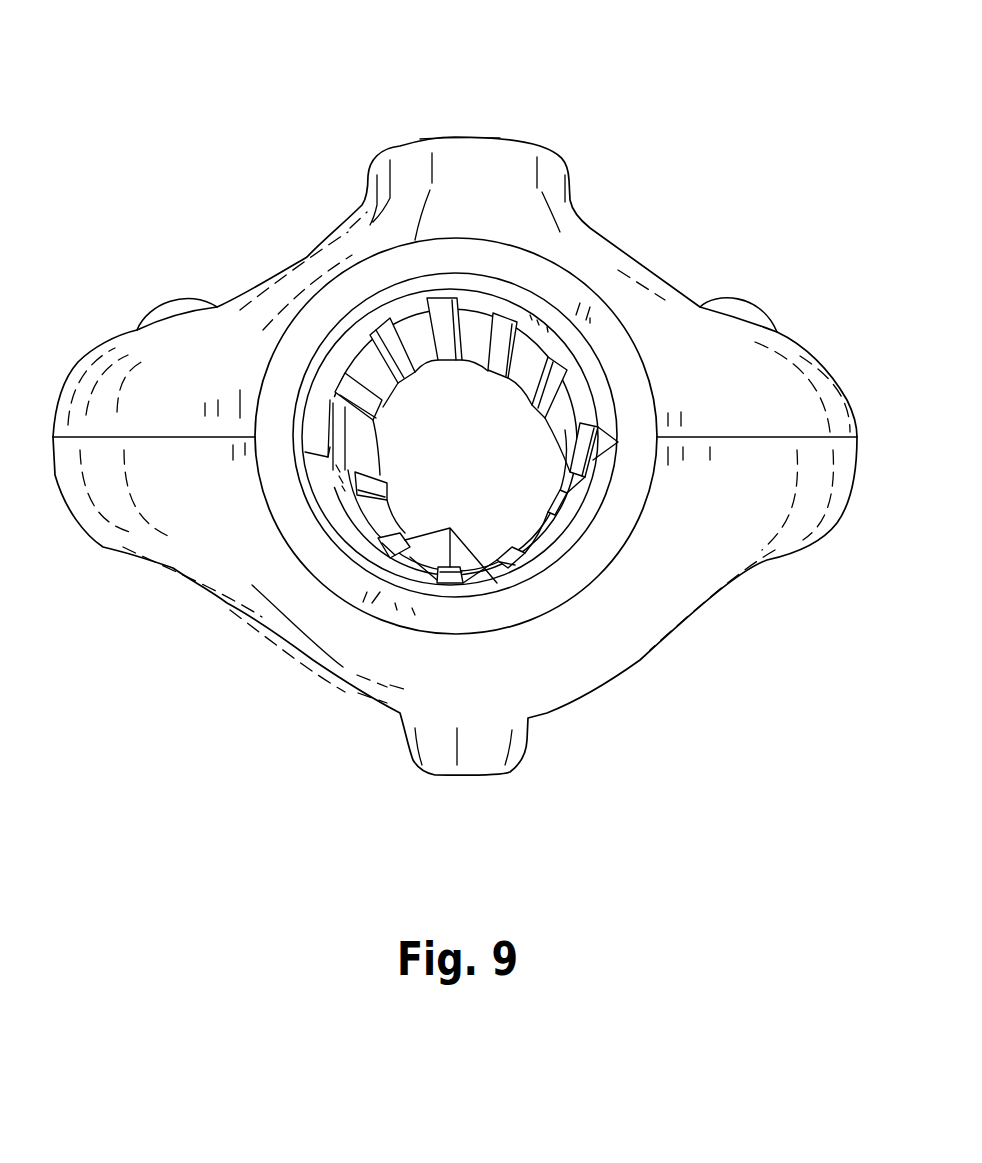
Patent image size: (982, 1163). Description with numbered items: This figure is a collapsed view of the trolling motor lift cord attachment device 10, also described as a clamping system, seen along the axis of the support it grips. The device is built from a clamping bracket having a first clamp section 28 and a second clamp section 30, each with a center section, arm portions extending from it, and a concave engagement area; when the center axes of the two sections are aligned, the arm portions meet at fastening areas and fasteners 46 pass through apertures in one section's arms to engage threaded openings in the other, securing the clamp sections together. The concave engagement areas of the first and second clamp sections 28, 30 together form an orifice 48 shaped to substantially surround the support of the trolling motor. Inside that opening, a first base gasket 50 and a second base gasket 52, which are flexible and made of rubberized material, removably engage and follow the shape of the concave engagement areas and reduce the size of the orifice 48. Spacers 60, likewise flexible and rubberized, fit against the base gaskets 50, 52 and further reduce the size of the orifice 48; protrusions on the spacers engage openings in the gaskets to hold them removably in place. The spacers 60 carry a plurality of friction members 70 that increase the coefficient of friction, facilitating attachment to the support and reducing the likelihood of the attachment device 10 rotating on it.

The trolling motor lift cord attachment device 10 is at (605, 105).
The first clamp section 28 is at (675, 665).
The second clamp section 30 is at (638, 240).
The fasteners 46 is at (174, 297).
The orifice 48 is at (461, 469).
The first base gasket 50 is at (366, 283).
The second base gasket 52 is at (335, 557).
The spacers 60 is at (377, 560).
The friction members 70 is at (455, 532).